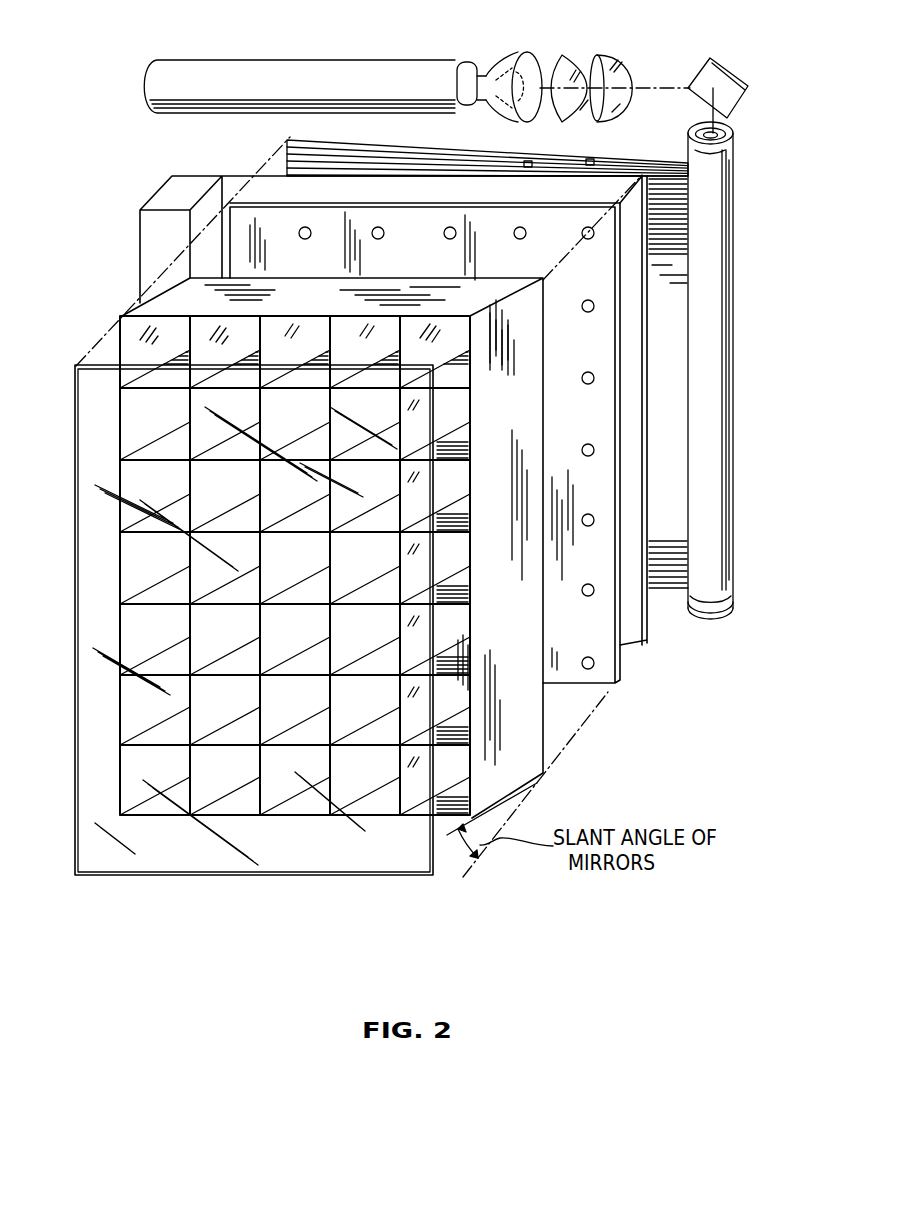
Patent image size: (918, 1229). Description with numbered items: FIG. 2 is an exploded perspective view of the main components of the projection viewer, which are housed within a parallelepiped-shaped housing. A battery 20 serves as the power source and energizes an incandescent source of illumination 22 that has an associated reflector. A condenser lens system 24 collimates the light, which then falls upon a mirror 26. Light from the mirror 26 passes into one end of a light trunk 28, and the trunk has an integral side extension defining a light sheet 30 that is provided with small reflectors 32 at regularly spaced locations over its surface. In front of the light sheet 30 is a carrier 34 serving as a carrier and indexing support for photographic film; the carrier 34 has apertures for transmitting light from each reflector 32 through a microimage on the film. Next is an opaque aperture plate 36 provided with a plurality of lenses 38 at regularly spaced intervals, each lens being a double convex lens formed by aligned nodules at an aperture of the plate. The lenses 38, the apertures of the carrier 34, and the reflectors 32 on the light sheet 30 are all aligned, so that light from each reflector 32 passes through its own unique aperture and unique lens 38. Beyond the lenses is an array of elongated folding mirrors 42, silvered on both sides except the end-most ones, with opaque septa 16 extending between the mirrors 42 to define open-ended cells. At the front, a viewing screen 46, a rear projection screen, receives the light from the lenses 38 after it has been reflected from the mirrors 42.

The opaque septa 16 is at (322, 362).
The battery 20 is at (355, 72).
The incandescent source of illumination 22 is at (519, 55).
The condenser lens system 24 is at (583, 58).
The mirror 26 is at (725, 76).
The light trunk 28 is at (723, 344).
The light sheet 30 is at (665, 557).
The small reflectors 32 is at (590, 159).
The carrier and indexing support for photographic film 34 is at (170, 193).
The opaque aperture plate 36 is at (600, 282).
The lenses 38 is at (449, 236).
The folding mirrors 42 is at (292, 354).
The viewing screen 46 is at (87, 578).